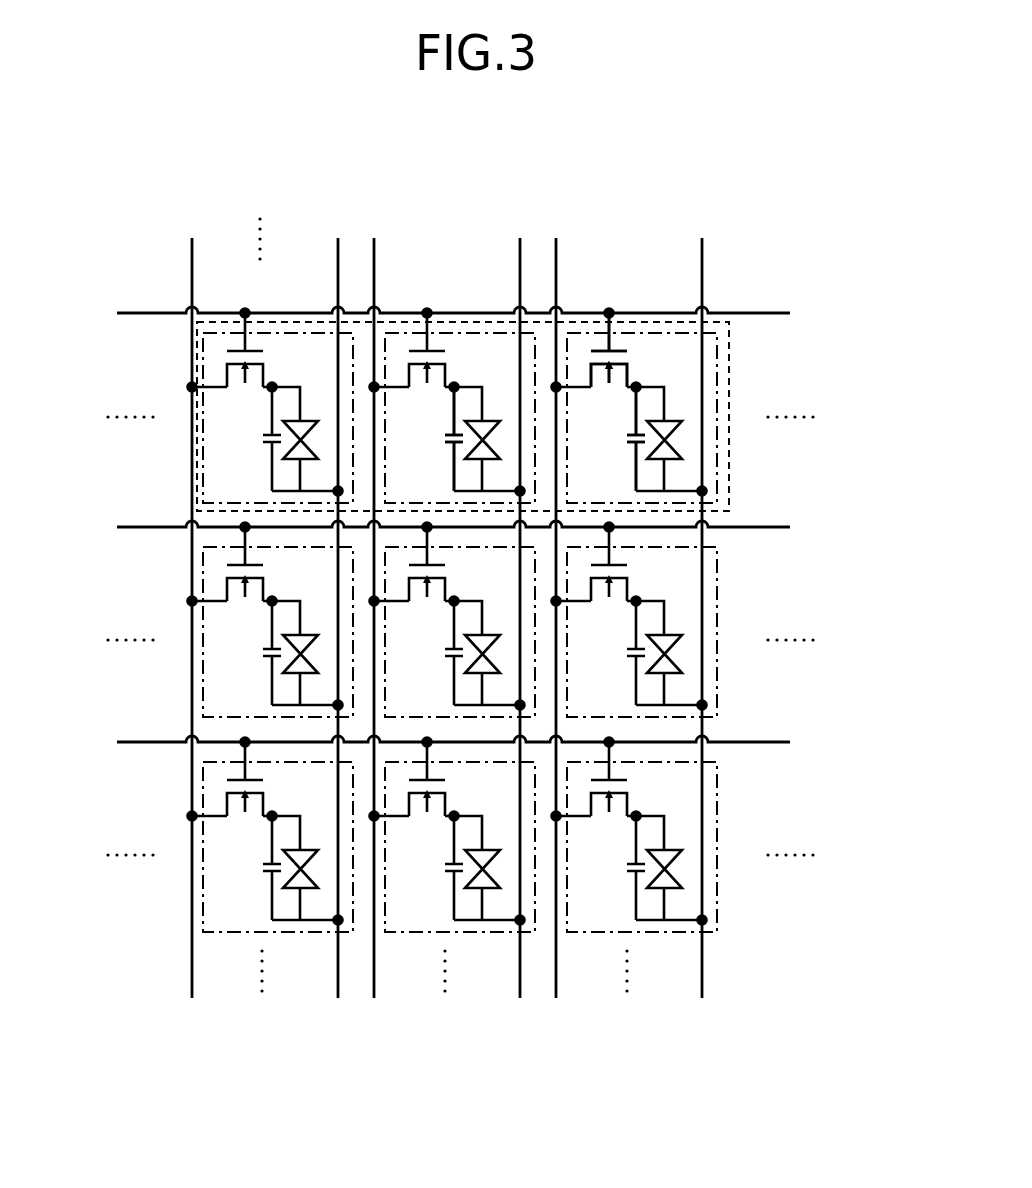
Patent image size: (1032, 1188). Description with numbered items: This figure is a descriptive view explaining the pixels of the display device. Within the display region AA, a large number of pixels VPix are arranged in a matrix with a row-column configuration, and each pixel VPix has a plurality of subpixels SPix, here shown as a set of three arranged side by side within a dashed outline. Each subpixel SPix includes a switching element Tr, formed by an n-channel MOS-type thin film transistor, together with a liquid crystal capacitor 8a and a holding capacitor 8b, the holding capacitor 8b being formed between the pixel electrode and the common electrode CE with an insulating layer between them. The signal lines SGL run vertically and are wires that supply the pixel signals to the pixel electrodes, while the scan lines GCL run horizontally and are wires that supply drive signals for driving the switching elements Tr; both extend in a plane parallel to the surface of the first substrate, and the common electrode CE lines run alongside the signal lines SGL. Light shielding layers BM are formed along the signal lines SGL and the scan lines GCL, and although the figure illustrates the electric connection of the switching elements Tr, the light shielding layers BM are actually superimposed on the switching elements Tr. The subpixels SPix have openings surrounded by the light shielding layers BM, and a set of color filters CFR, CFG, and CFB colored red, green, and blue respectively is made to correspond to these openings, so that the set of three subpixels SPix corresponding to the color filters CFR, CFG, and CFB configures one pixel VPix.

The signal line SGL is at (191, 261).
The scan line GCL is at (157, 313).
The common electrode CE is at (338, 969).
The light shielding layer BM is at (362, 333).
The subpixel SPix is at (305, 332).
The pixel VPix is at (730, 478).
The red color filter CFR is at (212, 468).
The green color filter CFG is at (489, 326).
The blue color filter CFB is at (659, 328).
The display region AA is at (712, 200).
The switching element Tr is at (597, 397).
The liquid crystal capacitor 8a is at (647, 450).
The holding capacitor 8b is at (452, 444).